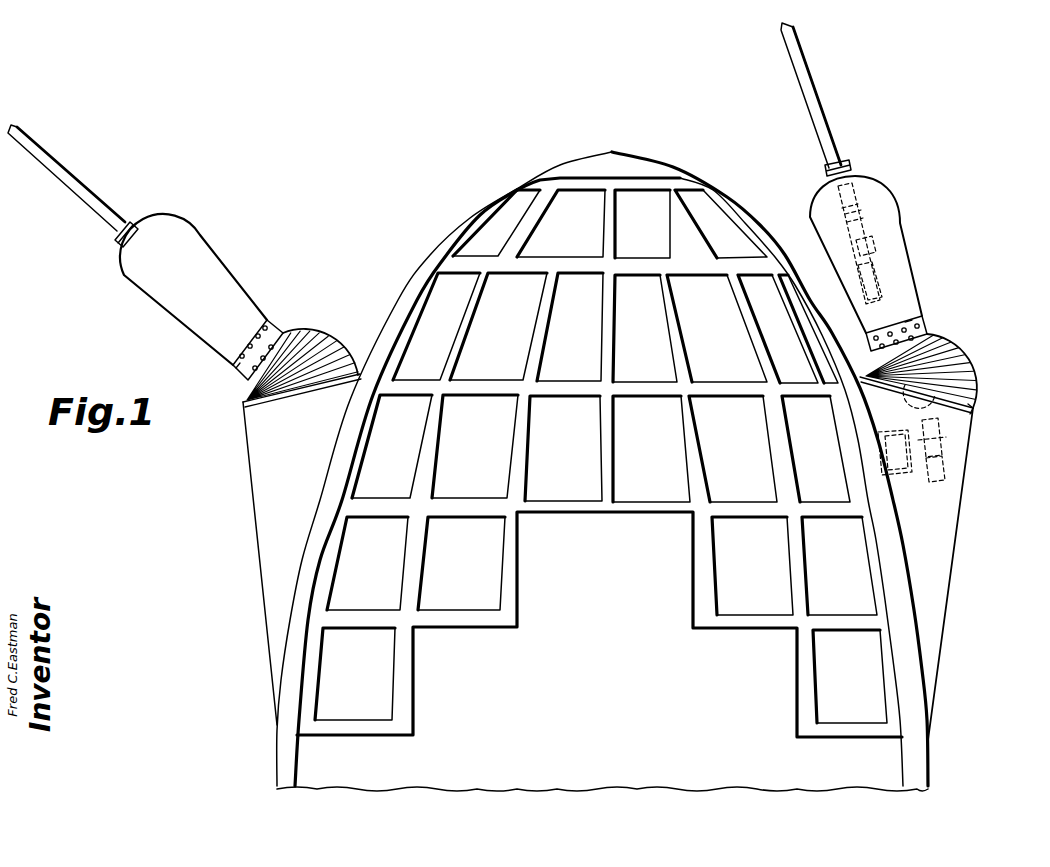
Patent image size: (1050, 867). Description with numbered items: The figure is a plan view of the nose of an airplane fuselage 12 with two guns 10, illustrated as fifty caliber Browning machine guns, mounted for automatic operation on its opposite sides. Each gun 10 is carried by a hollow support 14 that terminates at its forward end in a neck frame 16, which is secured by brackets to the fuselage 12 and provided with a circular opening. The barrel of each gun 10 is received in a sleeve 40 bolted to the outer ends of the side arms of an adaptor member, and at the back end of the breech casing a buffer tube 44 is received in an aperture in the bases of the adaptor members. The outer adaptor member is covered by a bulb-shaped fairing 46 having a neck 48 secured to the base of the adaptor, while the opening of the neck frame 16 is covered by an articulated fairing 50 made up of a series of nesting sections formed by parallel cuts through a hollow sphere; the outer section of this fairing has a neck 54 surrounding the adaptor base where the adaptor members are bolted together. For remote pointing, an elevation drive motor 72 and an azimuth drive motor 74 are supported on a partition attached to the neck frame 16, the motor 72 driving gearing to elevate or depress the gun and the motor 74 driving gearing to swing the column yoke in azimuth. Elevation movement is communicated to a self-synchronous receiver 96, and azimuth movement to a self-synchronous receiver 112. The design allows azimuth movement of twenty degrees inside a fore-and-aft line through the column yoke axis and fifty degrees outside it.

The gun 10 is at (68, 173).
The fuselage 12 is at (403, 297).
The hollow support 14 is at (250, 497).
The neck frame 16 is at (975, 411).
The sleeve 40 is at (140, 226).
The buffer tube 44 is at (920, 324).
The bulb-shaped fairing 46 is at (225, 263).
The neck 48 is at (238, 368).
The articulated fairing 50 is at (325, 338).
The neck 54 is at (281, 333).
The elevation drive motor 72 is at (935, 473).
The azimuth drive motor 74 is at (887, 450).
The self-synchronous receiver 96 is at (967, 369).
The self-synchronous receiver 112 is at (942, 461).